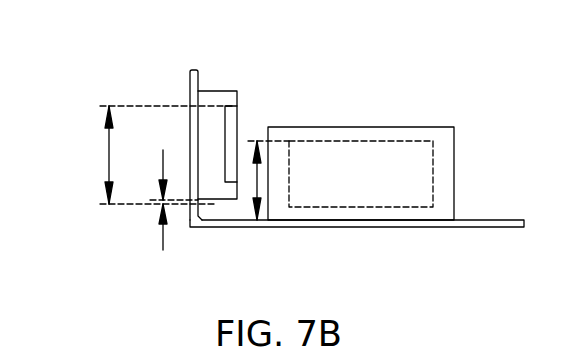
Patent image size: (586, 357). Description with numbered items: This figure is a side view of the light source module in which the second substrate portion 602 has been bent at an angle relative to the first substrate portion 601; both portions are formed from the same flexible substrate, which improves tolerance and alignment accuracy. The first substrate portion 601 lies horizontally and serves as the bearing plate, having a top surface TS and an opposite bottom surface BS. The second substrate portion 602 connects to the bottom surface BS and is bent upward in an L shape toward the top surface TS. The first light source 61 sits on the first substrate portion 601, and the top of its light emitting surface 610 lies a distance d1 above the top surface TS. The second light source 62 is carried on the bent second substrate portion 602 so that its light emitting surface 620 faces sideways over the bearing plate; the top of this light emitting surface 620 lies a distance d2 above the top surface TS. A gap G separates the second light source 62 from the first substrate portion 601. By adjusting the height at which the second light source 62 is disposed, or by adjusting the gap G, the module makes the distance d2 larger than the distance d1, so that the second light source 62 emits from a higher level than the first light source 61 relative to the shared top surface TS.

The first light source 61 is at (455, 168).
The light emitting surface of the first light source 610 is at (337, 158).
The second light source 62 is at (210, 91).
The light emitting surface of the second light source 620 is at (228, 113).
The first substrate portion 601 is at (524, 223).
The second substrate portion 602 is at (190, 83).
The distance d1 is at (257, 182).
The distance d2 is at (154, 155).
The gap G is at (160, 202).
The top surface TS is at (233, 222).
The bottom surface BS is at (370, 228).